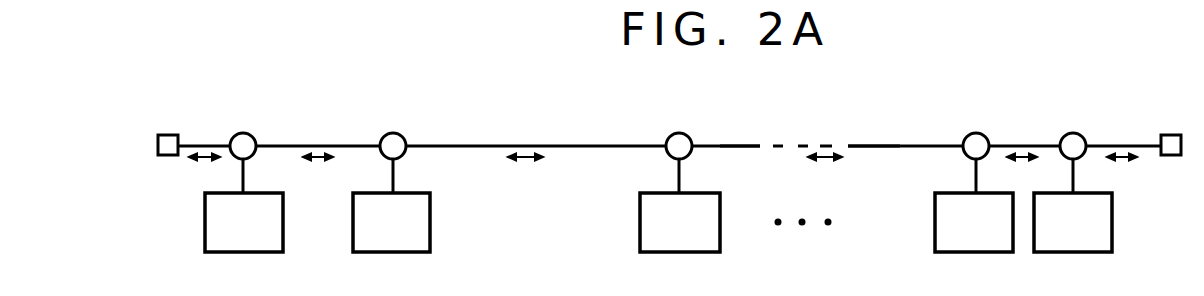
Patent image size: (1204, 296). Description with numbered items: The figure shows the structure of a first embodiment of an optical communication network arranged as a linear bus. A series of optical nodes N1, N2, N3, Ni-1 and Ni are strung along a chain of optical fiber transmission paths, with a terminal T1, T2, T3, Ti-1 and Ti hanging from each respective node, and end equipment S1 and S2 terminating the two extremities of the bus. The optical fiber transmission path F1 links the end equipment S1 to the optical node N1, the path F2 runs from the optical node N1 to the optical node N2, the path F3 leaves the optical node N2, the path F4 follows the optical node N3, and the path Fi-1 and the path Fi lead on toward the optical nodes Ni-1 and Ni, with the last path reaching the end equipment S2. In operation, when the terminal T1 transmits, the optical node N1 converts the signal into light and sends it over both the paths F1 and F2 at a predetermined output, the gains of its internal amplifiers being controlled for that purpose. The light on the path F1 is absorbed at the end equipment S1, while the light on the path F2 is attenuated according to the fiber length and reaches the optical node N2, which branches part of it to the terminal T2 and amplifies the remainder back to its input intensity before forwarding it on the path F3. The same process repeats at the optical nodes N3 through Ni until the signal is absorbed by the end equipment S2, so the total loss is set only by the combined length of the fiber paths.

The end equipment S1 is at (166, 133).
The end equipment S2 is at (1168, 133).
The optical node N1 is at (243, 131).
The optical node N2 is at (392, 131).
The optical node N3 is at (679, 131).
The optical node Ni-1 is at (975, 131).
The optical node Ni is at (1072, 131).
The optical fiber transmission path F1 is at (200, 140).
The optical fiber transmission path F2 is at (313, 140).
The optical fiber transmission path F3 is at (527, 141).
The optical fiber transmission path F4 is at (738, 141).
The optical fiber transmission path Fi-1 is at (875, 141).
The optical fiber transmission path Fi is at (1017, 141).
The terminal T1 is at (283, 240).
The terminal T2 is at (430, 240).
The terminal T3 is at (640, 240).
The terminal Ti-1 is at (935, 240).
The terminal Ti is at (1112, 240).